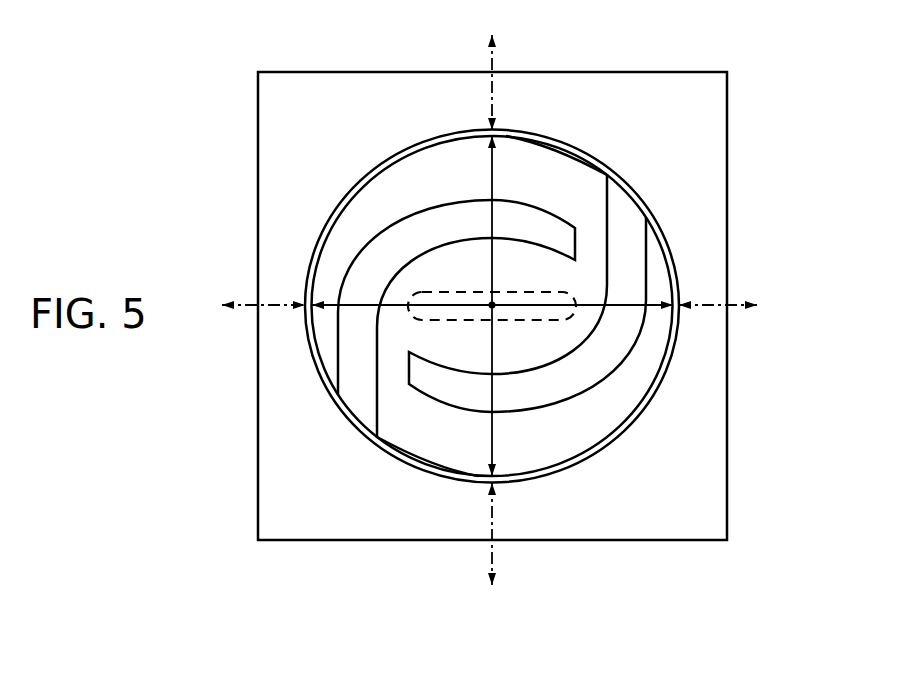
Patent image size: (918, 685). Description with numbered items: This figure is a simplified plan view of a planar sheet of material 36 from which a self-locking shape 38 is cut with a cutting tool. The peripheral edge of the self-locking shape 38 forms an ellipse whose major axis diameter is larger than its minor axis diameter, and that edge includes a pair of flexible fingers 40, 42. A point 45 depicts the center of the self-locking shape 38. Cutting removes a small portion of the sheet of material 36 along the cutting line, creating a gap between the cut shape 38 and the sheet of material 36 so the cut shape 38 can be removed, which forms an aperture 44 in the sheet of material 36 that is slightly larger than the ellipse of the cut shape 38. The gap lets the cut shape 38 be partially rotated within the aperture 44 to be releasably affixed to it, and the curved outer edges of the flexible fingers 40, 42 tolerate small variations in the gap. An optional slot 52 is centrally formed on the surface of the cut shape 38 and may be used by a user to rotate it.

The planar sheet of material 36 is at (719, 105).
The self-locking shape 38 is at (579, 194).
The flexible finger 40 is at (656, 337).
The flexible finger 42 is at (323, 328).
The aperture 44 is at (357, 178).
The point 45 is at (492, 305).
The slot 52 is at (420, 316).